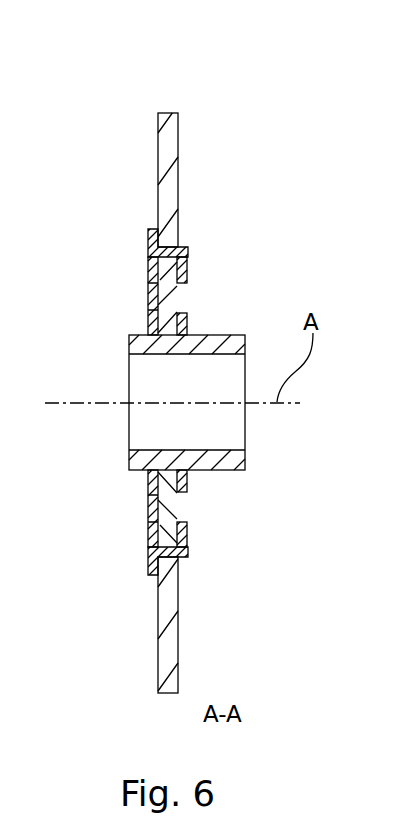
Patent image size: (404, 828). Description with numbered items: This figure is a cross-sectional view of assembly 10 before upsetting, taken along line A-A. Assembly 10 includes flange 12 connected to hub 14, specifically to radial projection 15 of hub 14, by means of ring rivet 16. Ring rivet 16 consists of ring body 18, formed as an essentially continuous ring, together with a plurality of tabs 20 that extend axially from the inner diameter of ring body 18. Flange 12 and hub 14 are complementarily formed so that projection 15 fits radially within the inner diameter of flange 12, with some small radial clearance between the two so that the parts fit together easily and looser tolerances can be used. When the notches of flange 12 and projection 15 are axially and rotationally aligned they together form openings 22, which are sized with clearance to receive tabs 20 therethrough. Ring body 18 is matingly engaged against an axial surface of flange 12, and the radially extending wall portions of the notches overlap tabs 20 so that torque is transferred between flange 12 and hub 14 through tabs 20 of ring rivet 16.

The assembly 10 is at (300, 154).
The flange 12 is at (172, 150).
The hub 14 is at (232, 348).
The radial projection 15 is at (175, 302).
The ring rivet 16 is at (125, 266).
The ring body 18 is at (148, 238).
The tabs 20 is at (185, 246).
The openings 22 is at (176, 188).